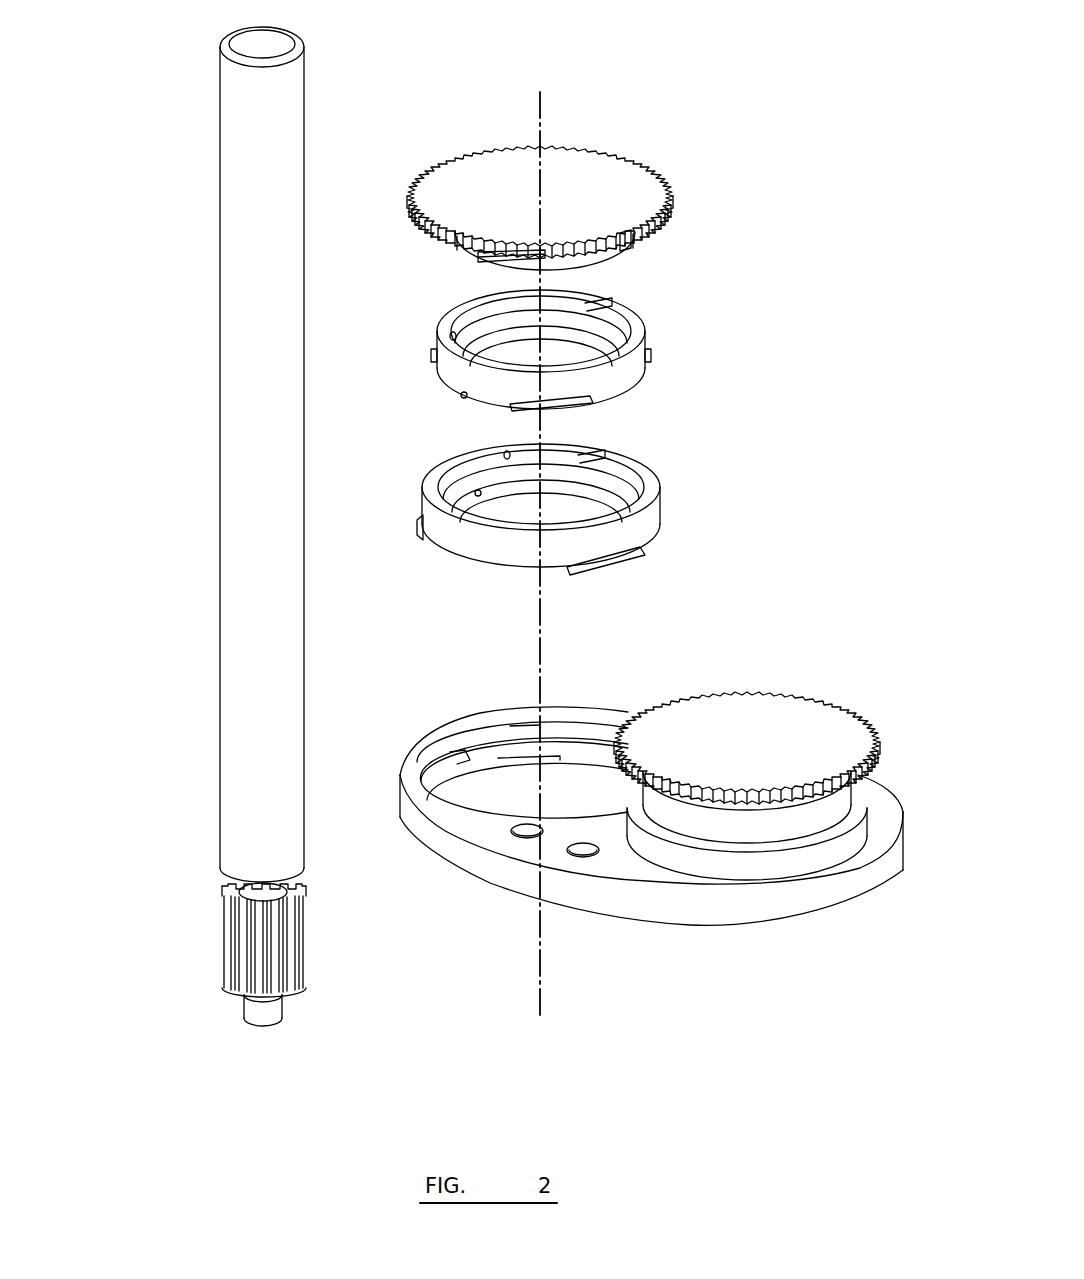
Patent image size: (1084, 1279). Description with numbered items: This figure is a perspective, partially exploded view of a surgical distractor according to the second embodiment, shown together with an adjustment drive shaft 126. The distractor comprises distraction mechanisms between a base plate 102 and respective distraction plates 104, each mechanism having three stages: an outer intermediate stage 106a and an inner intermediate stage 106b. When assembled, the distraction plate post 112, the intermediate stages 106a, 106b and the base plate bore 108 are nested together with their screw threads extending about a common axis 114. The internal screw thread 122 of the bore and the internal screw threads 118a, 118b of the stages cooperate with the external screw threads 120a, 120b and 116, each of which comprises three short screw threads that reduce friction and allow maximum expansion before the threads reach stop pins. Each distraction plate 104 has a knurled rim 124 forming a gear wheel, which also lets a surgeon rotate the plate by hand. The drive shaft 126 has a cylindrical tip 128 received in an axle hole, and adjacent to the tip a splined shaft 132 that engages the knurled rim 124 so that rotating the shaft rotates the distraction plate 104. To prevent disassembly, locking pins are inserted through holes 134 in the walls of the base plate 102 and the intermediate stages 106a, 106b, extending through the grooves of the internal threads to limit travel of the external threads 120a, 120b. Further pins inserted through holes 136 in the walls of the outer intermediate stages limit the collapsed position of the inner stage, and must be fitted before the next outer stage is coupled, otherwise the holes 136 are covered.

The base plate 102 is at (790, 905).
The distraction plate 104 is at (666, 433).
The outer intermediate stage 106a is at (650, 524).
The inner intermediate stage 106b is at (622, 382).
The base plate bore 108 is at (508, 785).
The distraction plate post 112 is at (467, 258).
The common axis 114 is at (532, 105).
The external screw thread 116 is at (478, 262).
The internal screw thread 118a is at (607, 458).
The internal screw thread 118b is at (600, 305).
The external screw thread 120a is at (428, 540).
The external screw thread 120b is at (437, 355).
The internal screw thread 122 is at (557, 738).
The knurled rim 124 is at (672, 192).
The adjustment drive shaft 126 is at (245, 297).
The cylindrical tip 128 is at (252, 1010).
The splined shaft 132 is at (240, 937).
The holes 134 is at (450, 334).
The pin holes 136 is at (462, 398).